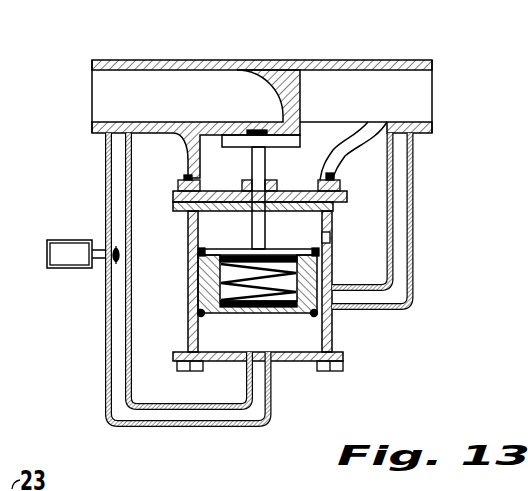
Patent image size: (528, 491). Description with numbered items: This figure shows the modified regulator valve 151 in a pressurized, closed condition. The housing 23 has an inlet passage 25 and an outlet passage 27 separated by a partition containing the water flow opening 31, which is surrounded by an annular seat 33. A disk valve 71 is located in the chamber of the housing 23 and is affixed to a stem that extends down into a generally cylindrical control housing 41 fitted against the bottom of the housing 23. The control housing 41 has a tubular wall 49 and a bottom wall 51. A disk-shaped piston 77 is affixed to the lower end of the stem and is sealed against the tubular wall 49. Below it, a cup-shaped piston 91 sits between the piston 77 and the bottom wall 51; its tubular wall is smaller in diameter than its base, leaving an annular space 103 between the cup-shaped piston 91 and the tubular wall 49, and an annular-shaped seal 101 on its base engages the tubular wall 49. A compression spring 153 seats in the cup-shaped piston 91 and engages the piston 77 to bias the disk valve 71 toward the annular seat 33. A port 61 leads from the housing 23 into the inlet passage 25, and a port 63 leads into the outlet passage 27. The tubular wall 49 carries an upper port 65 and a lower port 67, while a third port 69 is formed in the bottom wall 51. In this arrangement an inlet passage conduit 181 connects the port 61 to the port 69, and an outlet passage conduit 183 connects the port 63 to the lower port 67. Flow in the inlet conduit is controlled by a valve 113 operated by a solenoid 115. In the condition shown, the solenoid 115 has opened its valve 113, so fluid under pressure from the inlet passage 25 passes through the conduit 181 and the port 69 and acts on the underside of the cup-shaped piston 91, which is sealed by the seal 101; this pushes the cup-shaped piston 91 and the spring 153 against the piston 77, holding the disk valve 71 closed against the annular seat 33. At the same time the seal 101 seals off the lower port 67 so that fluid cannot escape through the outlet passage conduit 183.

The housing 23 is at (289, 69).
The inlet passage 25 is at (110, 96).
The outlet passage 27 is at (422, 100).
The water flow opening 31 is at (240, 134).
The annular seat 33 is at (288, 148).
The control housing 41 is at (189, 232).
The tubular wall 49 is at (333, 258).
The bottom wall 51 is at (217, 362).
The port 61 is at (108, 134).
The port 63 is at (420, 133).
The upper port 65 is at (331, 236).
The lower port 67 is at (328, 288).
The port 69 is at (268, 366).
The disk valve 71 is at (299, 166).
The piston 77 is at (211, 249).
The cup-shaped piston 91 is at (210, 284).
The annular-shaped seal 101 is at (333, 305).
The annular space 103 is at (200, 276).
The valve 113 is at (107, 265).
The solenoid 115 is at (85, 264).
The regulator valve 151 is at (440, 268).
The compression spring 153 is at (210, 297).
The inlet passage conduit 181 is at (122, 366).
The outlet passage conduit 183 is at (398, 209).